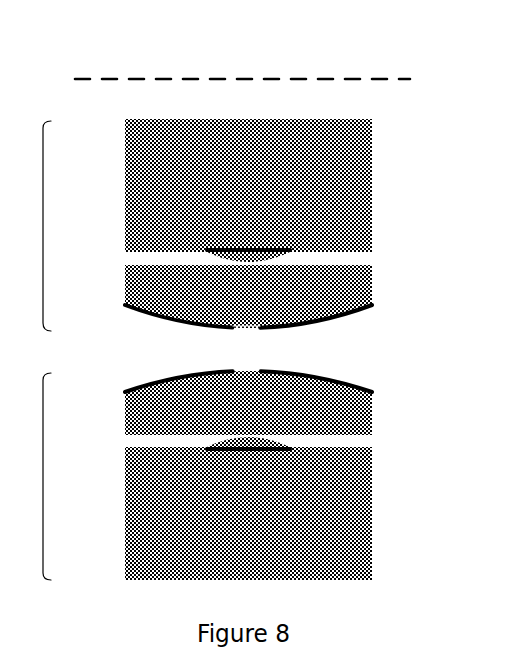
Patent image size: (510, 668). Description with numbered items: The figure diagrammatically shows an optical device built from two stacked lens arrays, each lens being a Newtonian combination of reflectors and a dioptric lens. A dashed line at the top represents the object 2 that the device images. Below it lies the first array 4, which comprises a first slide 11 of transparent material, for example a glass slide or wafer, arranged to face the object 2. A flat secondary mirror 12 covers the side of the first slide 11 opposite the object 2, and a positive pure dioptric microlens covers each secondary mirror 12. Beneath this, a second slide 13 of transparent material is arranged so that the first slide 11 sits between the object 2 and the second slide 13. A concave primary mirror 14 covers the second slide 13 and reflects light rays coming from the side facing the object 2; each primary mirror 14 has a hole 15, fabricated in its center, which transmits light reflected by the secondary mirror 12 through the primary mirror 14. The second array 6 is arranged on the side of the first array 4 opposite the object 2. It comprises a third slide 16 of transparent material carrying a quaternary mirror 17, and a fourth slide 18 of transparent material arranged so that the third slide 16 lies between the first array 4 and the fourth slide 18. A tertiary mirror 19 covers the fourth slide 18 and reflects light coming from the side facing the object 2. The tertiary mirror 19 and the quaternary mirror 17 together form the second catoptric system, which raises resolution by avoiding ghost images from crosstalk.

The object 2 is at (170, 78).
The first array 4 is at (43, 227).
The second array 6 is at (43, 478).
The first slide 11 is at (155, 140).
The secondary mirror 12 is at (217, 248).
The second slide 13 is at (143, 277).
The primary mirror 14 is at (164, 318).
The hole 15 is at (257, 327).
The third slide 16 is at (147, 412).
The quaternary mirror 17 is at (190, 374).
The fourth slide 18 is at (163, 548).
The tertiary mirror 19 is at (210, 452).